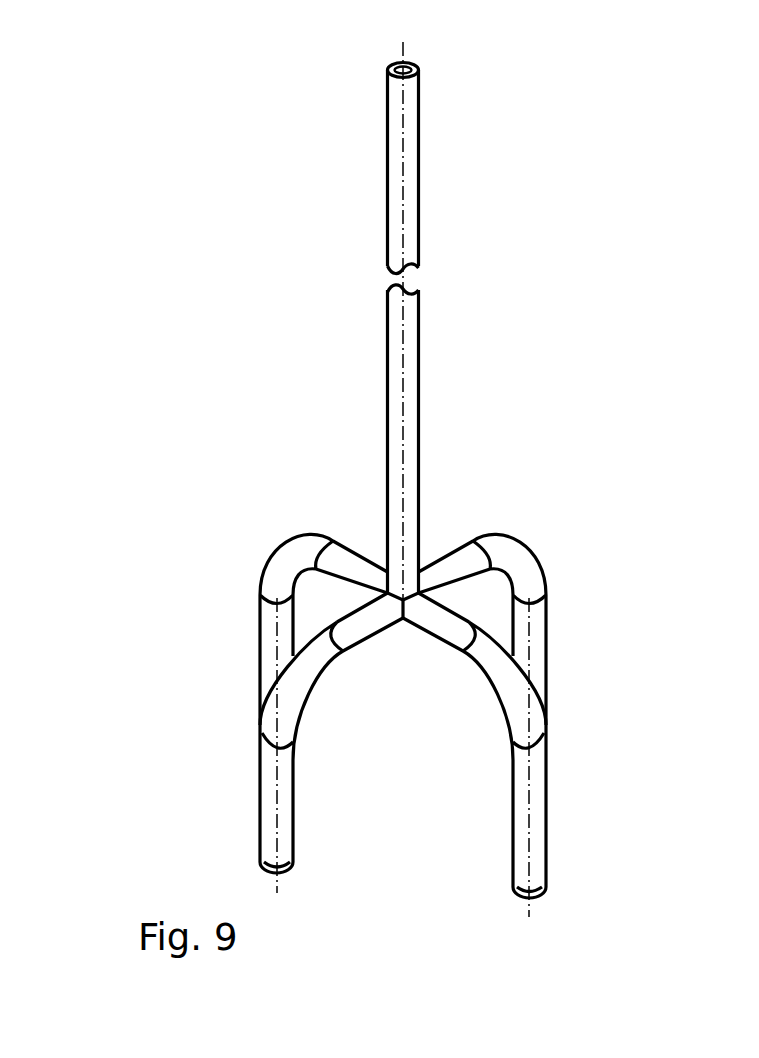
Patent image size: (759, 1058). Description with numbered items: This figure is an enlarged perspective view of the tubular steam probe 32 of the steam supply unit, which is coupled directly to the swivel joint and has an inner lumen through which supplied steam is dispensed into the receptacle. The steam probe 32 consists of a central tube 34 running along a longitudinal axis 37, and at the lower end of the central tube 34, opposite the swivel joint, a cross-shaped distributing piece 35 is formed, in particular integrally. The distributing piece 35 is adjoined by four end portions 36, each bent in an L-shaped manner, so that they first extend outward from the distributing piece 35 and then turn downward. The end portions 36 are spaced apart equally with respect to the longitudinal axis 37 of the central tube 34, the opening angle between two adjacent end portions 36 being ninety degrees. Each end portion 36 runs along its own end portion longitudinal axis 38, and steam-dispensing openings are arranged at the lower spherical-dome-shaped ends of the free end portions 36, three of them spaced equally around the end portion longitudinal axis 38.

The steam probe 32 is at (583, 423).
The central tube 34 is at (400, 386).
The distributing piece 35 is at (347, 617).
The end portions 36 is at (536, 799).
The longitudinal axis 37 is at (402, 178).
The end portion longitudinal axis 38 is at (531, 740).